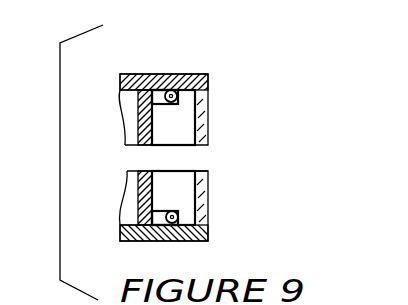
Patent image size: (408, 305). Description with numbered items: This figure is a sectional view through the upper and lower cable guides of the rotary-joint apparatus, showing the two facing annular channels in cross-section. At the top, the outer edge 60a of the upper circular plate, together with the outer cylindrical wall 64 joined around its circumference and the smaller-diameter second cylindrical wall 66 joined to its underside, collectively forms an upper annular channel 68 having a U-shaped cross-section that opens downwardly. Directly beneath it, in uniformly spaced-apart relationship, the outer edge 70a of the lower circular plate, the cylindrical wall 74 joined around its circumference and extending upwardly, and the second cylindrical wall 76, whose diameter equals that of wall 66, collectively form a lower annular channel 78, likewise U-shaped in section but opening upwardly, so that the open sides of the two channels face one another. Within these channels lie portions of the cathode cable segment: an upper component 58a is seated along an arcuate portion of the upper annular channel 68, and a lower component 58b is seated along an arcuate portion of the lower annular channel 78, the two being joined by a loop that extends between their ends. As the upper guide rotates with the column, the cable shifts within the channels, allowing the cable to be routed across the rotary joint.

The upper component of cathode cable segment 58a is at (170, 90).
The lower component of cathode cable segment 58b is at (167, 214).
The outer edge of upper circular plate 60a is at (186, 74).
The cylindrical wall 64 is at (202, 103).
The second cylindrical wall 66 is at (140, 122).
The upper annular channel 68 is at (175, 127).
The outer edge of lower circular plate 70a is at (182, 231).
The cylindrical wall 74 is at (203, 174).
The second cylindrical wall 76 is at (148, 183).
The lower annular channel 78 is at (190, 197).